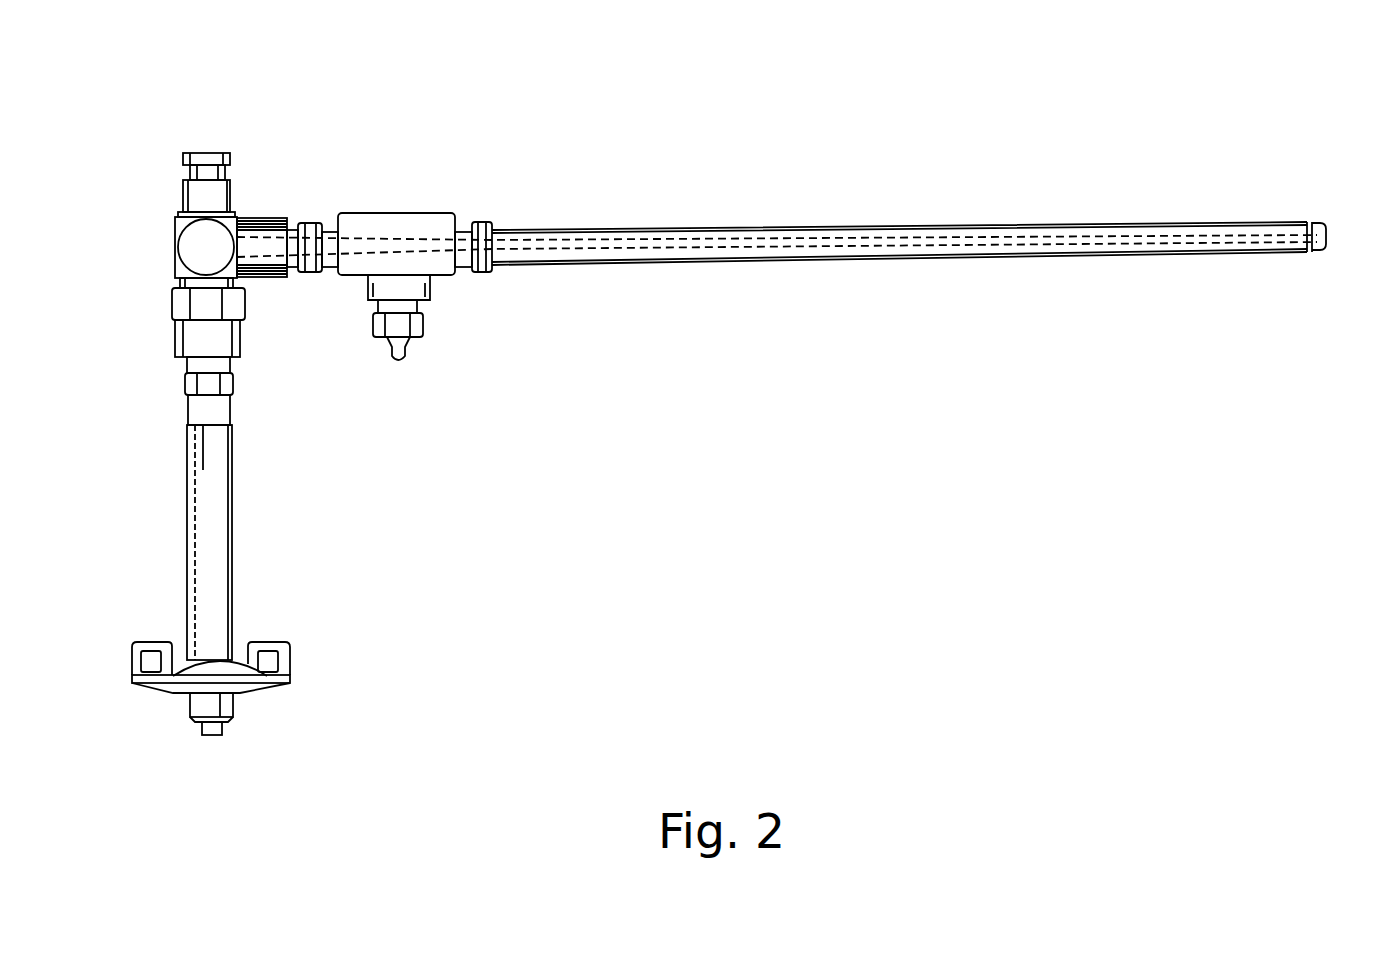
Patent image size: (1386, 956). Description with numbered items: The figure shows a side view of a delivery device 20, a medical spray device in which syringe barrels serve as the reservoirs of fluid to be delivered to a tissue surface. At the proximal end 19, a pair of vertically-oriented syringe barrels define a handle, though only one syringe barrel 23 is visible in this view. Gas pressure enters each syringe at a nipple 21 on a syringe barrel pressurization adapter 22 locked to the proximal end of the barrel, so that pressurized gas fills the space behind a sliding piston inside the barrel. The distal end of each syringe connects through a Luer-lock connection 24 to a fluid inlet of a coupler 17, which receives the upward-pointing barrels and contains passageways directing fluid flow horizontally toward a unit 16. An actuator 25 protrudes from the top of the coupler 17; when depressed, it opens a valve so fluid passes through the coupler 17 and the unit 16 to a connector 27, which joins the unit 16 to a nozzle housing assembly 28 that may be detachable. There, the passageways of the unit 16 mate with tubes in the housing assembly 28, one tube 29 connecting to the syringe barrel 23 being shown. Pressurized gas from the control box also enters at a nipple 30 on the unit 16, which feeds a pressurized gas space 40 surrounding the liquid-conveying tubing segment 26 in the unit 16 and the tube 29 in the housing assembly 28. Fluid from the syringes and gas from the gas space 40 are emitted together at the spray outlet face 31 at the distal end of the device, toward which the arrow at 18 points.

The unit 16 is at (412, 222).
The coupler 17 is at (173, 248).
The probe assembly 18 is at (1274, 184).
The proximal end 19 is at (124, 171).
The delivery device 20 is at (724, 106).
The nipple 21 is at (212, 737).
The syringe barrel pressurization adapter 22 is at (138, 645).
The syringe barrel 23 is at (183, 482).
The Luer-lock connection 24 is at (185, 384).
The actuator 25 is at (213, 152).
The liquid-conveying tubing segment 26 is at (372, 237).
The connector 27 is at (488, 272).
The nozzle housing assembly 28 is at (773, 227).
The tube 29 is at (1187, 244).
The nipple 30 is at (403, 363).
The spray outlet face 31 is at (1320, 223).
The pressurized gas space 40 is at (1085, 232).